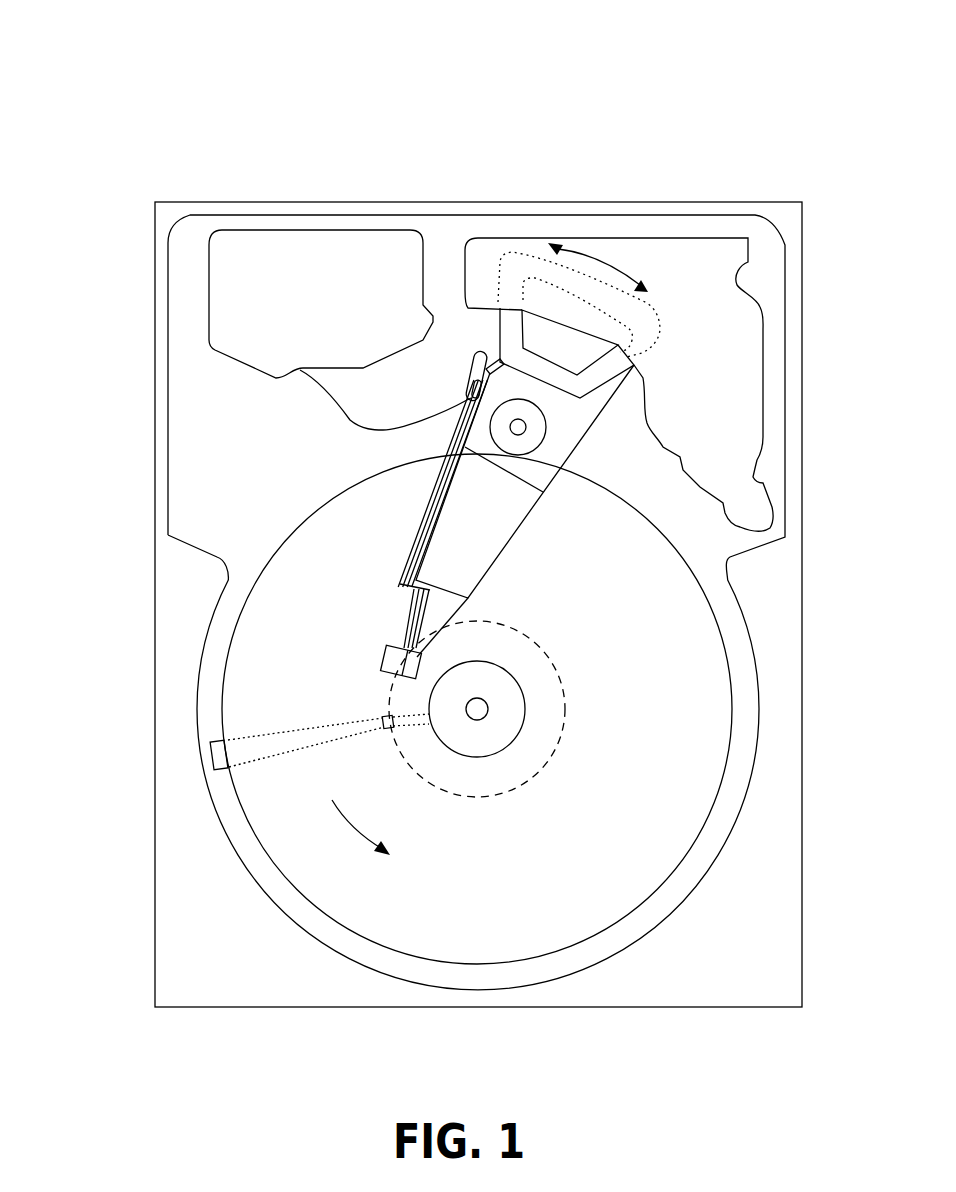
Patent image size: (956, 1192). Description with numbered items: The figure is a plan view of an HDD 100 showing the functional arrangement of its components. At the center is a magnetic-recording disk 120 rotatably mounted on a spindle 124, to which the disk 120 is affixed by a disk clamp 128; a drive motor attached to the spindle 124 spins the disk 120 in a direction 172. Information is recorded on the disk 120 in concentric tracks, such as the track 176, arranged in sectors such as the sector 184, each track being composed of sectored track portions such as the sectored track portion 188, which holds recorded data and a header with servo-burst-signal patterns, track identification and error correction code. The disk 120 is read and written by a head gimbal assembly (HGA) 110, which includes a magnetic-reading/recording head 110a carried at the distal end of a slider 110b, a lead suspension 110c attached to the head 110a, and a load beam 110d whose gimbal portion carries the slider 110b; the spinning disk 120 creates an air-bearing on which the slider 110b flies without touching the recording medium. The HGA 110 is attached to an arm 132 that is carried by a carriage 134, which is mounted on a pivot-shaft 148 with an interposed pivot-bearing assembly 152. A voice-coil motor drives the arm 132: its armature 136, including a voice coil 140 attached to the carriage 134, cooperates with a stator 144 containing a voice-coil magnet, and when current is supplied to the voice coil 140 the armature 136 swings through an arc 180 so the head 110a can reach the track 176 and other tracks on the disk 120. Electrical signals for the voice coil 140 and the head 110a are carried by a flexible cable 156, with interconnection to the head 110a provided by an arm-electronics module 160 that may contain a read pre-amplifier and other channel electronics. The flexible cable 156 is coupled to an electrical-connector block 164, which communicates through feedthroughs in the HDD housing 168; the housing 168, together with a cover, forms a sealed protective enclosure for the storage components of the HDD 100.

The HDD 100 is at (80, 79).
The head gimbal assembly 110 is at (252, 529).
The magnetic-reading/recording head 110a is at (391, 650).
The slider 110b is at (410, 628).
The lead suspension 110c is at (407, 610).
The load beam 110d is at (403, 582).
The magnetic-recording disk 120 is at (660, 660).
The spindle 124 is at (488, 708).
The disk clamp 128 is at (512, 735).
The arm 132 is at (470, 543).
The carriage 134 is at (533, 465).
The armature 136 is at (495, 347).
The voice coil 140 is at (513, 318).
The stator 144 is at (730, 332).
The pivot-shaft 148 is at (527, 427).
The pivot-bearing assembly 152 is at (532, 440).
The flexible cable 156 is at (337, 402).
The arm-electronics module 160 is at (471, 402).
The electrical-connector block 164 is at (236, 303).
The HDD housing 168 is at (783, 213).
The direction 172 is at (363, 838).
The track 176 is at (556, 670).
The arc 180 is at (598, 252).
The sector 184 is at (210, 755).
The sectored track portion 188 is at (380, 718).